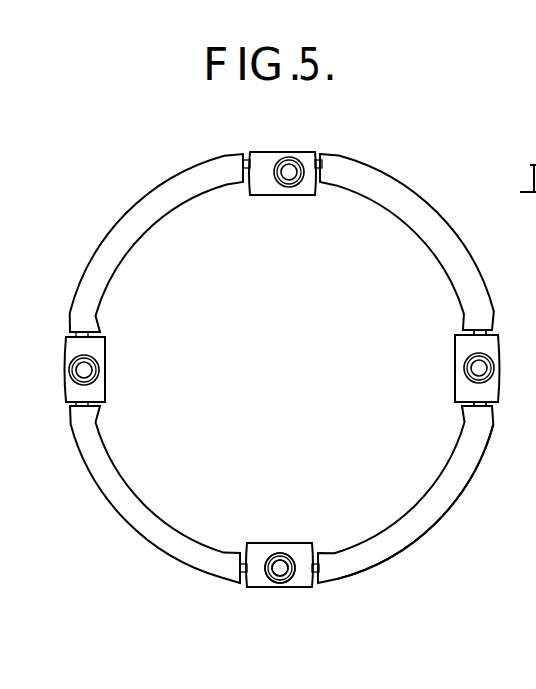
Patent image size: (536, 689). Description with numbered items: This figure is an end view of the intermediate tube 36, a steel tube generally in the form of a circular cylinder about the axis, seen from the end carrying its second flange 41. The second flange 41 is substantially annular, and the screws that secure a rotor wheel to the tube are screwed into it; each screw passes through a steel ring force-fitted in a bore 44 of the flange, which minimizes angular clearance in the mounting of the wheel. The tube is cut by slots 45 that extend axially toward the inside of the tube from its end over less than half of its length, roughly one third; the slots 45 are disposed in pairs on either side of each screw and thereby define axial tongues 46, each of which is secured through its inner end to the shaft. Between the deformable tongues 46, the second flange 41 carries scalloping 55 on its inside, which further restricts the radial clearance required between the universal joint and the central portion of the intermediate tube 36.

The intermediate tube 36 is at (301, 364).
The second flange 41 is at (445, 492).
The bore 44 is at (288, 575).
The slots 45 is at (492, 331).
The axial tongues 46 is at (268, 182).
The scalloping 55 is at (157, 223).